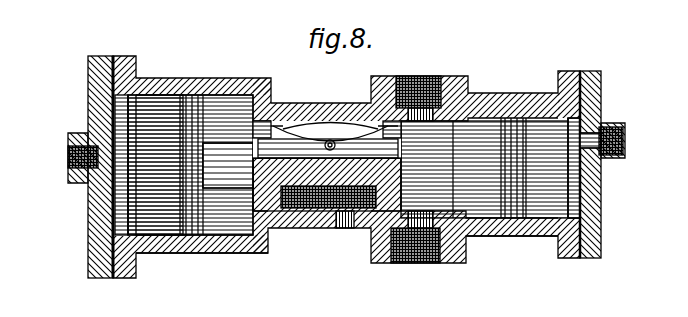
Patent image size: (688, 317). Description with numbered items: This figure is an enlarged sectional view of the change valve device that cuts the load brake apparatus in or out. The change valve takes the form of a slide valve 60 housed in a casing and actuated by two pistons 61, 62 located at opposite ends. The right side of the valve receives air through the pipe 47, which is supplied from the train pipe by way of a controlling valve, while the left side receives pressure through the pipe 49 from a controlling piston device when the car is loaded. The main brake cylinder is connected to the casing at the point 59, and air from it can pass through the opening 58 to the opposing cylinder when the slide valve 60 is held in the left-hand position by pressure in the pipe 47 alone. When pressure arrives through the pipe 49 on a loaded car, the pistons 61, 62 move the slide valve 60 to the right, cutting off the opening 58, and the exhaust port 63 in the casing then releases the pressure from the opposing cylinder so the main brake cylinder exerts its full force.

The pipe 47 is at (618, 130).
The pipe 49 is at (60, 150).
The opening 58 is at (412, 250).
The point of connection 59 is at (426, 70).
The slide valve 60 is at (265, 197).
The piston 61 is at (503, 212).
The piston 62 is at (188, 228).
The exhaust port 63 is at (339, 208).